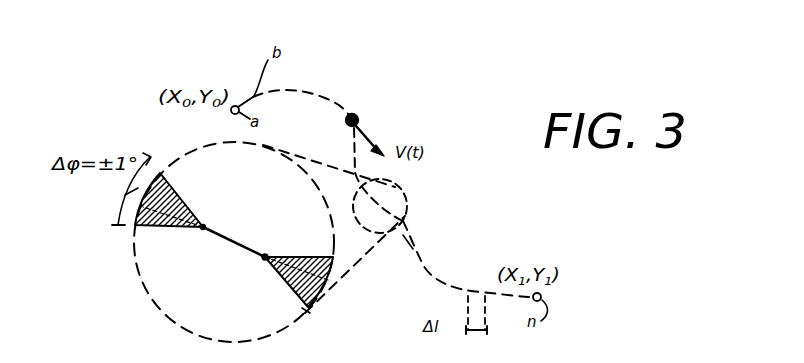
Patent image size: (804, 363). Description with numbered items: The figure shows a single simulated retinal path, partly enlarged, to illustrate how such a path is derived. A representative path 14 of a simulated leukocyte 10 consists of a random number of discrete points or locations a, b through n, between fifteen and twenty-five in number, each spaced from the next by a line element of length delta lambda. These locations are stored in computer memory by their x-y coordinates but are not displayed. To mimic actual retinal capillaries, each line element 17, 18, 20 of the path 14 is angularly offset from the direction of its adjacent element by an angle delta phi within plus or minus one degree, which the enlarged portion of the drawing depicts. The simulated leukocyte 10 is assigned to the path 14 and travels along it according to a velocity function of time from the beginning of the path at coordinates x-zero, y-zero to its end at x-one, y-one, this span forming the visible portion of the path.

The simulated leukocyte 10 is at (358, 112).
The path 14 is at (410, 246).
The line element 17 is at (178, 197).
The line element 18 is at (240, 249).
The line element 20 is at (298, 282).